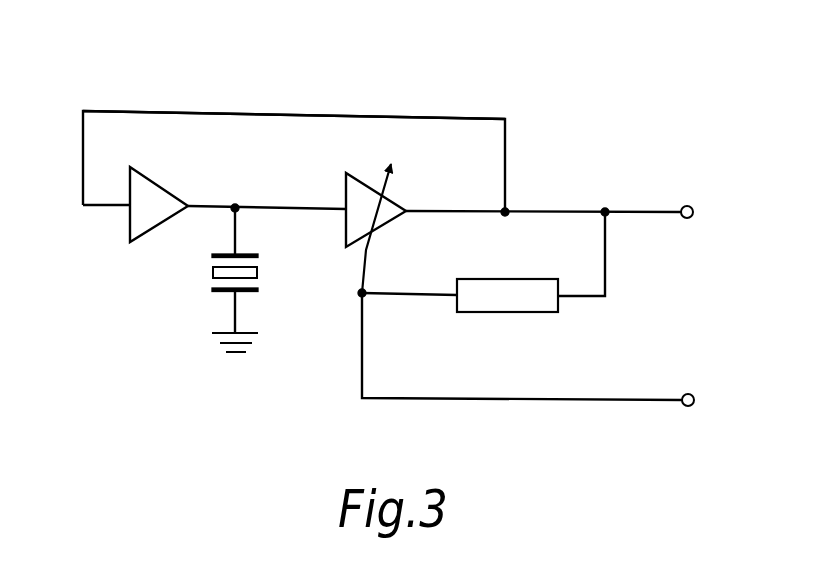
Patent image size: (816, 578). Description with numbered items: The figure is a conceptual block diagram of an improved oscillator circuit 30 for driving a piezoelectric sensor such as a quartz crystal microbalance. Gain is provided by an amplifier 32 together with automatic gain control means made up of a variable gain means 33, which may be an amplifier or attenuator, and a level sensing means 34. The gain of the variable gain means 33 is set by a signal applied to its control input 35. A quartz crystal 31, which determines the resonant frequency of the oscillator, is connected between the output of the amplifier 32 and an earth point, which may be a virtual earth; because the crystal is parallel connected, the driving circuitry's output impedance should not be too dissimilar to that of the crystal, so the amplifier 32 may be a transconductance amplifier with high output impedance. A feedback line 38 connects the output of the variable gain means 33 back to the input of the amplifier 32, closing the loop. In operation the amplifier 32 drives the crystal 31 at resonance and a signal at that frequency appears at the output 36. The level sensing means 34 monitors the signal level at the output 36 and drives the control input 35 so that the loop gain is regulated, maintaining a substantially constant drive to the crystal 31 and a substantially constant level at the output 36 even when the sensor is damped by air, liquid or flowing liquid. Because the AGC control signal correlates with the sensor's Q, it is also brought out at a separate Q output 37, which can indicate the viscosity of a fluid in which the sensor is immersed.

The improved oscillator circuit 30 is at (132, 66).
The quartz crystal 31 is at (212, 272).
The amplifier 32 is at (148, 196).
The variable gain means 33 is at (350, 196).
The level sensing means 34 is at (508, 300).
The control input 35 is at (363, 262).
The output 36 is at (686, 205).
The Q output 37 is at (687, 393).
The feedback line 38 is at (437, 117).